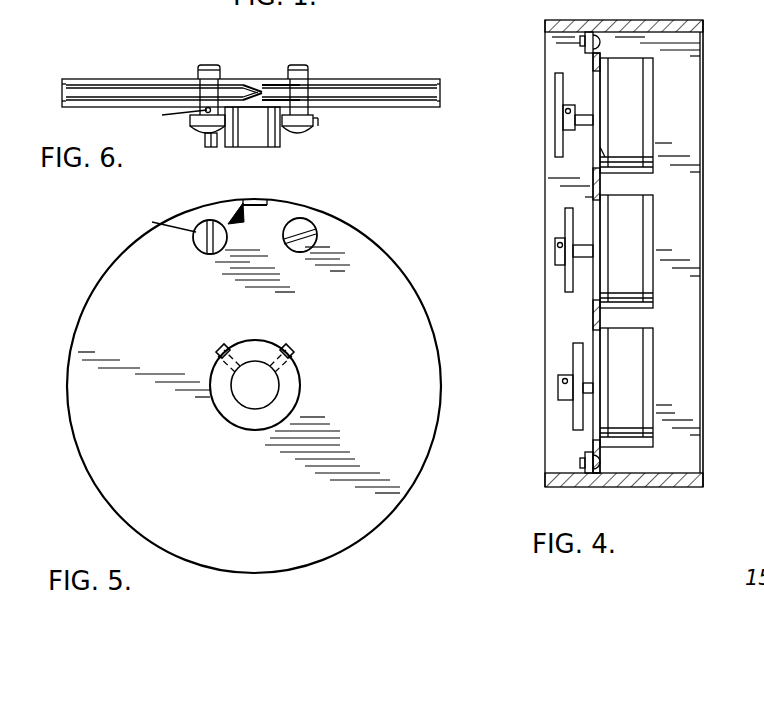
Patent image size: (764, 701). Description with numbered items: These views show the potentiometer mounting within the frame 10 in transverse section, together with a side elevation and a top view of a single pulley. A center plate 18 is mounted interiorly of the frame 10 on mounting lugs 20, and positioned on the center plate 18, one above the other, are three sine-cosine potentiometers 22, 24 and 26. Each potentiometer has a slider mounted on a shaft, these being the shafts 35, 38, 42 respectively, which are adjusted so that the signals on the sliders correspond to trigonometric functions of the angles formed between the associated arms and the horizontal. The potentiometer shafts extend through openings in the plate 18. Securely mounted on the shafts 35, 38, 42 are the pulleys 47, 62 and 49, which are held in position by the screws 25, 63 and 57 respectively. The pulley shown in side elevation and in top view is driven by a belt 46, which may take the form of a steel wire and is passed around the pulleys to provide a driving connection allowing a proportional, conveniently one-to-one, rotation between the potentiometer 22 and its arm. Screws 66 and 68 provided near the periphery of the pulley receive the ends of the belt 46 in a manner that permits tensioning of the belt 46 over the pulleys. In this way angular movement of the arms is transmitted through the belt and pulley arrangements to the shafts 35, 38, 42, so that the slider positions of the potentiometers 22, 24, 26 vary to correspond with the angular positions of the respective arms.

In FIG. 4, the frame 10 is at (703, 23).
In FIG. 4, the center plate 18 is at (593, 322).
In FIG. 4, the mounting lugs 20 is at (585, 50).
In FIG. 4, the sine-cosine potentiometer 22 is at (634, 365).
In FIG. 4, the sine-cosine potentiometer 24 is at (640, 262).
In FIG. 5, the screw 25 is at (218, 356).
In FIG. 4, the screw 25 is at (560, 385).
In FIG. 4, the sine-cosine potentiometer 26 is at (636, 123).
In FIG. 4, the potentiometer shaft 35 is at (595, 388).
In FIG. 4, the potentiometer shaft 38 is at (598, 250).
In FIG. 4, the potentiometer shaft 42 is at (597, 118).
In FIG. 6, the belt 46 is at (262, 82).
In FIG. 5, the belt 46 is at (233, 225).
In FIG. 6, the pulley 47 is at (110, 80).
In FIG. 5, the pulley 47 is at (355, 527).
In FIG. 4, the pulley 47 is at (573, 357).
In FIG. 4, the pulley 49 is at (556, 91).
In FIG. 4, the screw 57 is at (565, 118).
In FIG. 4, the pulley 62 is at (566, 270).
In FIG. 4, the screw 63 is at (556, 246).
In FIG. 6, the screw 66 is at (192, 121).
In FIG. 5, the screw 66 is at (196, 240).
In FIG. 6, the screw 68 is at (312, 122).
In FIG. 5, the screw 68 is at (316, 228).